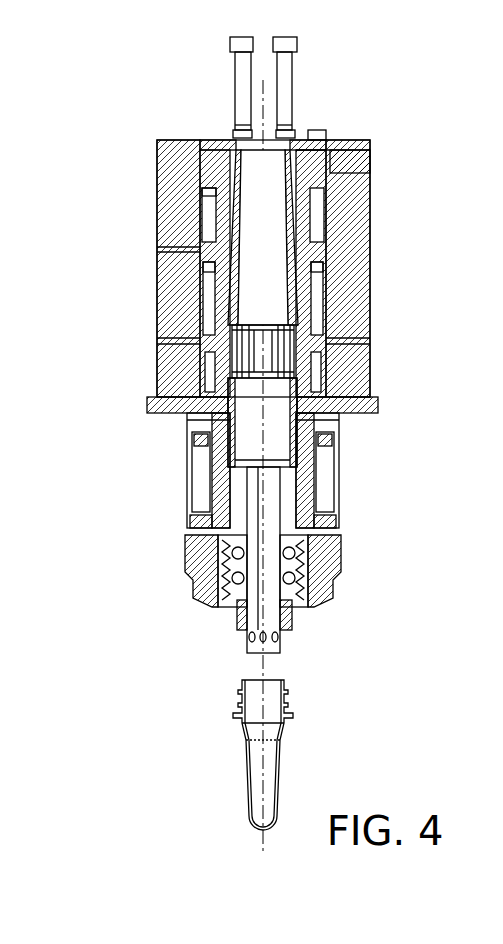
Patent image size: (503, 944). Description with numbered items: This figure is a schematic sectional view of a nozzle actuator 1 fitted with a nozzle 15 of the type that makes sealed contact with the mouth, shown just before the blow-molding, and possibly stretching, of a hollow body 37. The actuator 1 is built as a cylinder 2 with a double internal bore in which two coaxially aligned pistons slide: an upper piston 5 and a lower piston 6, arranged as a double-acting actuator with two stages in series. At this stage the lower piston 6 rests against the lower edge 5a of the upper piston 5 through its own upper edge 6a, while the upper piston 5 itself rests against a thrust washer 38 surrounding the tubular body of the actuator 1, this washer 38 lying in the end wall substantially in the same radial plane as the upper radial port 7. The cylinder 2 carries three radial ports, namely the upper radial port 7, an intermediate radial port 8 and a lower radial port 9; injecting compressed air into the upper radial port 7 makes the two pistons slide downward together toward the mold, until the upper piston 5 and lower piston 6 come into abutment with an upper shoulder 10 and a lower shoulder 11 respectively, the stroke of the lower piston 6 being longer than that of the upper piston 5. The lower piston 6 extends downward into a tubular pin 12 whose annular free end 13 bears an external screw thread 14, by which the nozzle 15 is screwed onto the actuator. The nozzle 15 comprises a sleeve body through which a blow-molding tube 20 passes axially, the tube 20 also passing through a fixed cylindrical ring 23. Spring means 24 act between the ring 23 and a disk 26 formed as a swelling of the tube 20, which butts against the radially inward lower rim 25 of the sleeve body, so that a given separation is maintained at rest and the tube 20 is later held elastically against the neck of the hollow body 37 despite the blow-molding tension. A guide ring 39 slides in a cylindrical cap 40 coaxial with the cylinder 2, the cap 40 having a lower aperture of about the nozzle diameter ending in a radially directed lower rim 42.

The nozzle actuator 1 is at (392, 292).
The cylinder 2 is at (368, 240).
The upper piston 5 is at (205, 190).
The lower edge of the upper piston 5a is at (218, 250).
The lower piston 6 is at (322, 275).
The upper edge of the lower piston 6a is at (202, 262).
The upper radial port 7 is at (360, 175).
The intermediate radial port 8 is at (173, 248).
The lower radial port 9 is at (175, 338).
The upper shoulder 10 is at (333, 227).
The lower shoulder 11 is at (325, 333).
The pin 12 is at (318, 438).
The free end 13 is at (310, 470).
The screw thread 14 is at (323, 500).
The nozzle of the type which makes sealed contact with the mouth 15 is at (365, 549).
The blow-molding tube 20 is at (283, 633).
The fixed cylindrical ring 23 is at (223, 533).
The spring means 24 is at (322, 570).
The lower rim 25 is at (304, 606).
The disk 26 is at (220, 603).
The hollow body 37 is at (285, 772).
The thrust washer 38 is at (303, 170).
The guide ring 39 is at (200, 437).
The cylindrical cap 40 is at (188, 468).
The lower rim of the cap 42 is at (200, 517).